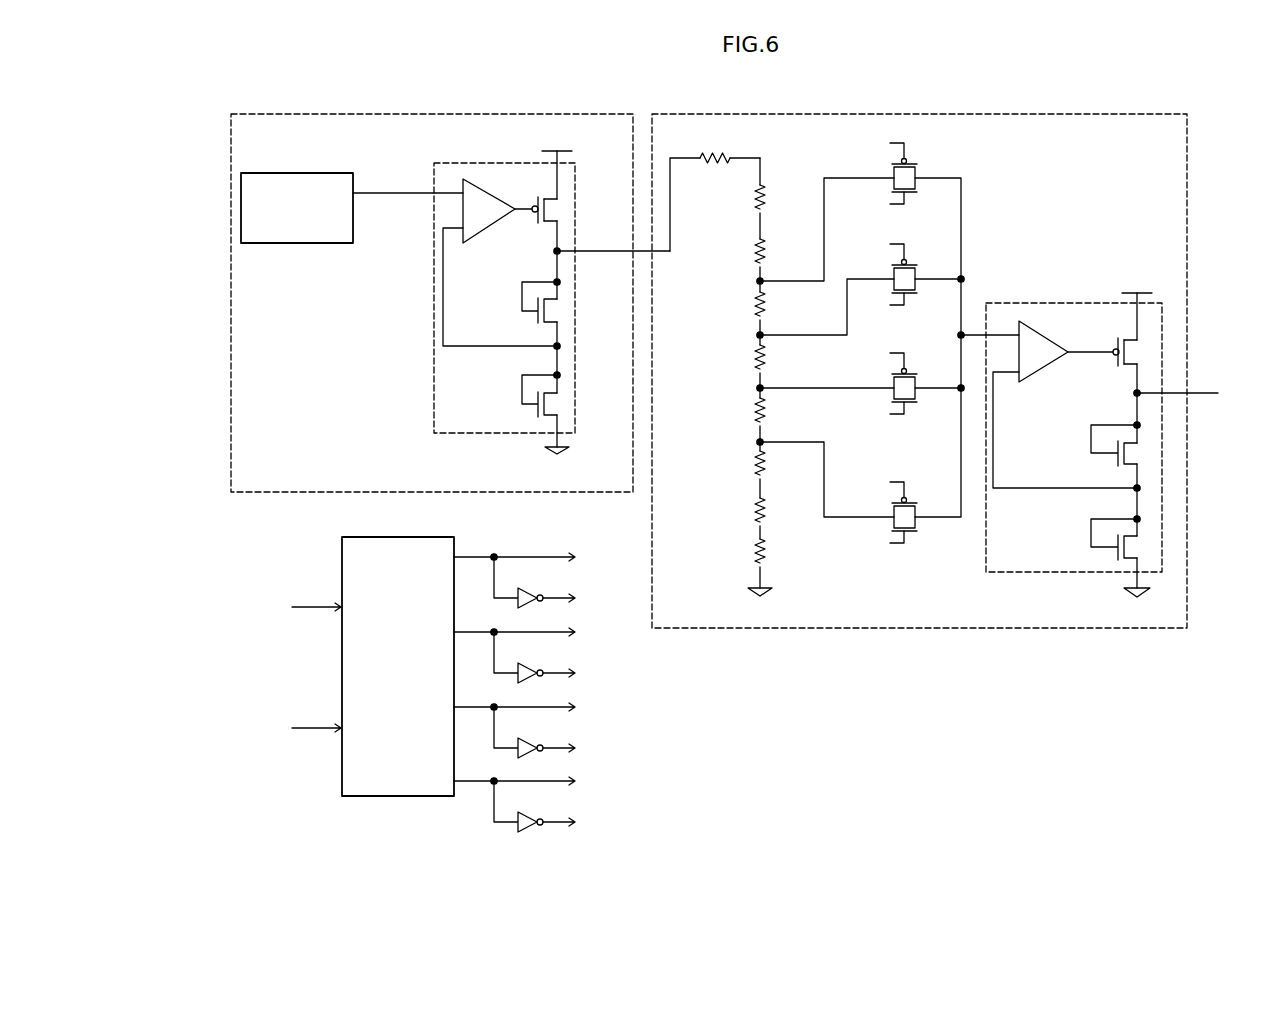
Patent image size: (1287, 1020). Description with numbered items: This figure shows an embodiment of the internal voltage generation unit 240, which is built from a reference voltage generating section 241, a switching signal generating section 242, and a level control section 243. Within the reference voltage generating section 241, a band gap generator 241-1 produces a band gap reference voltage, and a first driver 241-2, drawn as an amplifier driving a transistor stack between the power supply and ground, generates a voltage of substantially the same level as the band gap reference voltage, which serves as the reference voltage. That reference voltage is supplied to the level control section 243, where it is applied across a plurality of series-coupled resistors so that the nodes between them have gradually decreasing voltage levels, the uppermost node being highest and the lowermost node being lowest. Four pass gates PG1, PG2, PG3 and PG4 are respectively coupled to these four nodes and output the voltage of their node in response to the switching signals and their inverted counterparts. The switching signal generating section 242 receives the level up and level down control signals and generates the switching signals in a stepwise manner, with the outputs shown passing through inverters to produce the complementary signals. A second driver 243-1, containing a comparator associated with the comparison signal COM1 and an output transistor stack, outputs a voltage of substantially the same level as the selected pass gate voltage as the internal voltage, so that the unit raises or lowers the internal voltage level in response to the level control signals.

The internal voltage generation unit 240 is at (288, 85).
The reference voltage generating section 241 is at (550, 114).
The band gap generator 241-1 is at (320, 173).
The first driver 241-2 is at (462, 163).
The switching signal generating section 242 is at (423, 537).
The level control section 243 is at (1066, 114).
The second driver 243-1 is at (1036, 303).
The pass gate PG1 is at (915, 505).
The pass gate PG2 is at (915, 375).
The pass gate PG3 is at (915, 266).
The pass gate PG4 is at (915, 165).
The comparison signal COM1 is at (1046, 338).